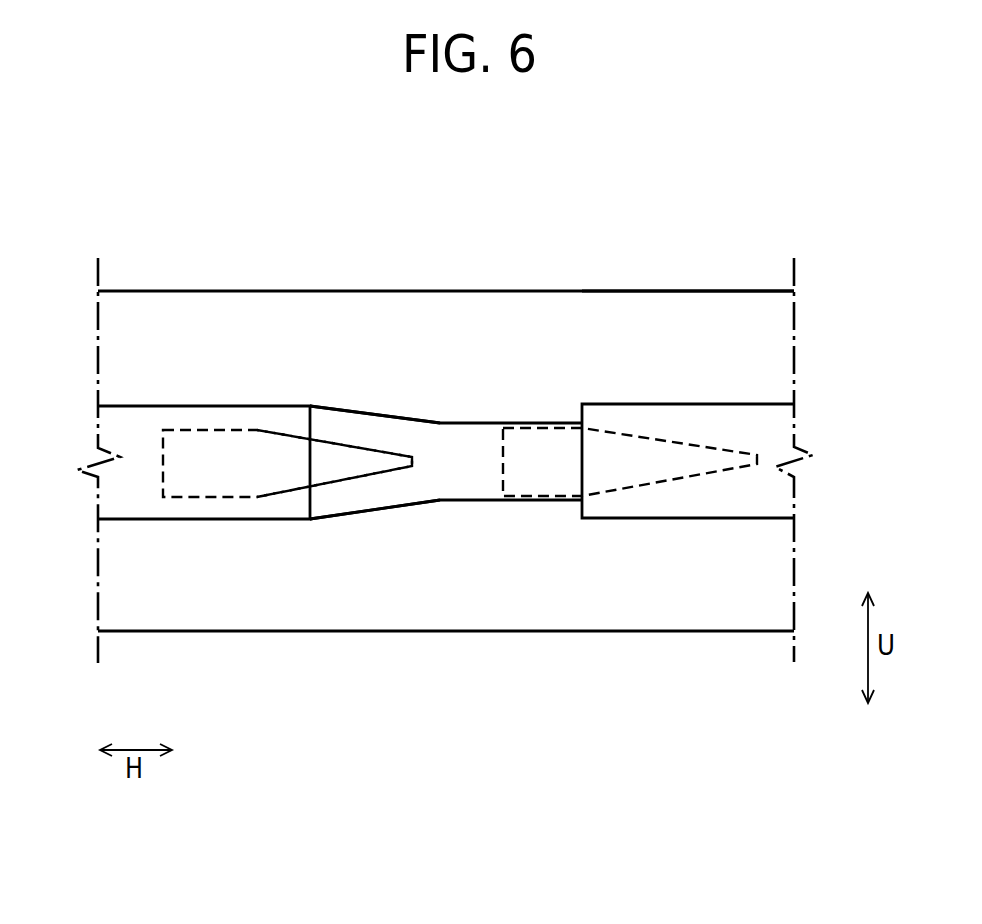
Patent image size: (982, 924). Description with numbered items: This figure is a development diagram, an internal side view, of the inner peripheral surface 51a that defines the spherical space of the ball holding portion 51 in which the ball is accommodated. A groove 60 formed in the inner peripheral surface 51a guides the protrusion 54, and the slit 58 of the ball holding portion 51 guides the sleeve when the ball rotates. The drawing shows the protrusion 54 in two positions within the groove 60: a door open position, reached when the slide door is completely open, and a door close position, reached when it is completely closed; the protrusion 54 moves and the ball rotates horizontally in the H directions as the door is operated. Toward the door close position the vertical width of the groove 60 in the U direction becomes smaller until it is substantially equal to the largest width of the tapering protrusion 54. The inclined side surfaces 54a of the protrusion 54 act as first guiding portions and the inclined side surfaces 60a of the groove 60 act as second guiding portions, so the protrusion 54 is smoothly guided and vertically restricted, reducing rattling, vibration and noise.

The ball holding portion 51 is at (628, 290).
The inner peripheral surface 51a is at (698, 302).
The protrusion 54 is at (339, 493).
The inclined side surfaces 54a is at (332, 440).
The slit 58 is at (125, 505).
The groove 60 is at (465, 445).
The inclined side surfaces 60a is at (417, 424).